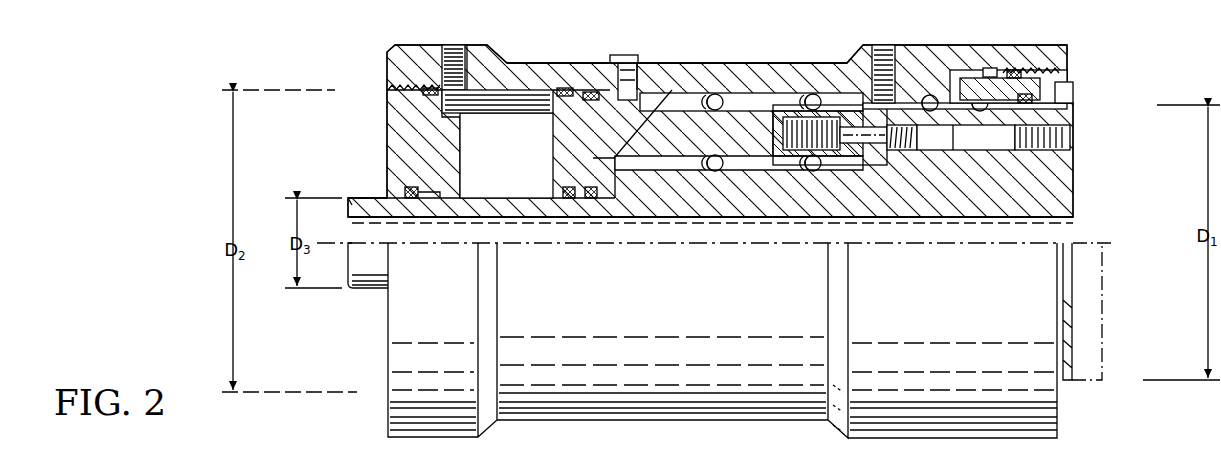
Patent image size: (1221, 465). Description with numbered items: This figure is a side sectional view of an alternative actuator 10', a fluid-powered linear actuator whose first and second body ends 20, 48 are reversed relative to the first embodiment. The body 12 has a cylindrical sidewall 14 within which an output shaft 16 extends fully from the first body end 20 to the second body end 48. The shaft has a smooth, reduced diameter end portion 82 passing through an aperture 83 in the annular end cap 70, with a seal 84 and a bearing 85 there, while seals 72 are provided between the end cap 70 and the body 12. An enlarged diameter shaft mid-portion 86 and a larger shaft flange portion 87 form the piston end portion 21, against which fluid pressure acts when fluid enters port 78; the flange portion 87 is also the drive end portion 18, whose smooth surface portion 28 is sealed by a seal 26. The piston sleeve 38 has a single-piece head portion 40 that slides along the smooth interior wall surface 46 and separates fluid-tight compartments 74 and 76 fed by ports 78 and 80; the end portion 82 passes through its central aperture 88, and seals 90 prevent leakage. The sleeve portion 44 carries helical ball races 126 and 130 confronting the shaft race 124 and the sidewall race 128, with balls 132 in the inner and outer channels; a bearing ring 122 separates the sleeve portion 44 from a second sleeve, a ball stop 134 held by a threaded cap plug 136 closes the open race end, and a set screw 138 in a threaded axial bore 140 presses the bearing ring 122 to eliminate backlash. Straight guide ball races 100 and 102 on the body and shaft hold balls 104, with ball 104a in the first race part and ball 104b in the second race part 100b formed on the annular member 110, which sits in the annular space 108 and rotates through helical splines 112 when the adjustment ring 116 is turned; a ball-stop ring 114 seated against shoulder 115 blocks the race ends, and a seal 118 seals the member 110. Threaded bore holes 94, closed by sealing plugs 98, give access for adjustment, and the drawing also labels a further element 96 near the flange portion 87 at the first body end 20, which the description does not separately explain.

The actuator 10' is at (315, 136).
The body 12 is at (543, 63).
The sidewall 14 is at (760, 112).
The output shaft 16 is at (365, 268).
The drive end portion 18 is at (1073, 205).
The first end 20 is at (1068, 58).
The piston end portion 21 is at (689, 205).
The seal 26 is at (1068, 98).
The radially outward facing surface portion 28 is at (1062, 110).
The piston sleeve 38 is at (689, 139).
The head portion 40 is at (563, 133).
The sleeve portion 44 is at (765, 125).
The interior wall surface 46 is at (483, 88).
The second end 48 is at (388, 66).
The end cap 70 is at (393, 103).
The seals 72 is at (403, 45).
The fluid-tight compartment 74 is at (665, 110).
The fluid-tight compartment 76 is at (513, 92).
The port 78 is at (885, 44).
The port 80 is at (455, 48).
The reduced diameter end portion 82 is at (356, 200).
The aperture 83 is at (388, 197).
The seal 84 is at (413, 187).
The bearing 85 is at (462, 190).
The shaft mid-portion 86 is at (620, 200).
The shaft flange portion 87 is at (1055, 120).
The central aperture 88 is at (580, 199).
The seals 90 is at (570, 187).
The bore holes 94 is at (1007, 152).
The ring 96 is at (1068, 130).
The sealing plug 98 is at (913, 150).
The body ball race 100 is at (947, 97).
The second ball race part 100b is at (1033, 87).
The shaft ball race 102 is at (952, 125).
The balls 104 is at (933, 113).
The ball 104a is at (930, 94).
The ball 104b is at (978, 94).
The annular space 108 is at (1075, 106).
The annular member 110 is at (1040, 214).
The helical splines 112 is at (967, 73).
The ball-stop ring 114 is at (1024, 137).
The shoulder 115 is at (966, 137).
The adjustment ring 116 is at (1068, 78).
The seal 118 is at (1043, 80).
The bearing ring 122 is at (802, 100).
The helical ball race 124 is at (795, 170).
The helical ball races 126 is at (736, 172).
The helical ball race 128 is at (688, 93).
The ball races 130 is at (748, 107).
The balls 132 is at (720, 94).
The ball stop 134 is at (620, 56).
The threaded cap plug 136 is at (638, 62).
The set screw 138 is at (845, 165).
The threaded axial bore 140 is at (872, 165).